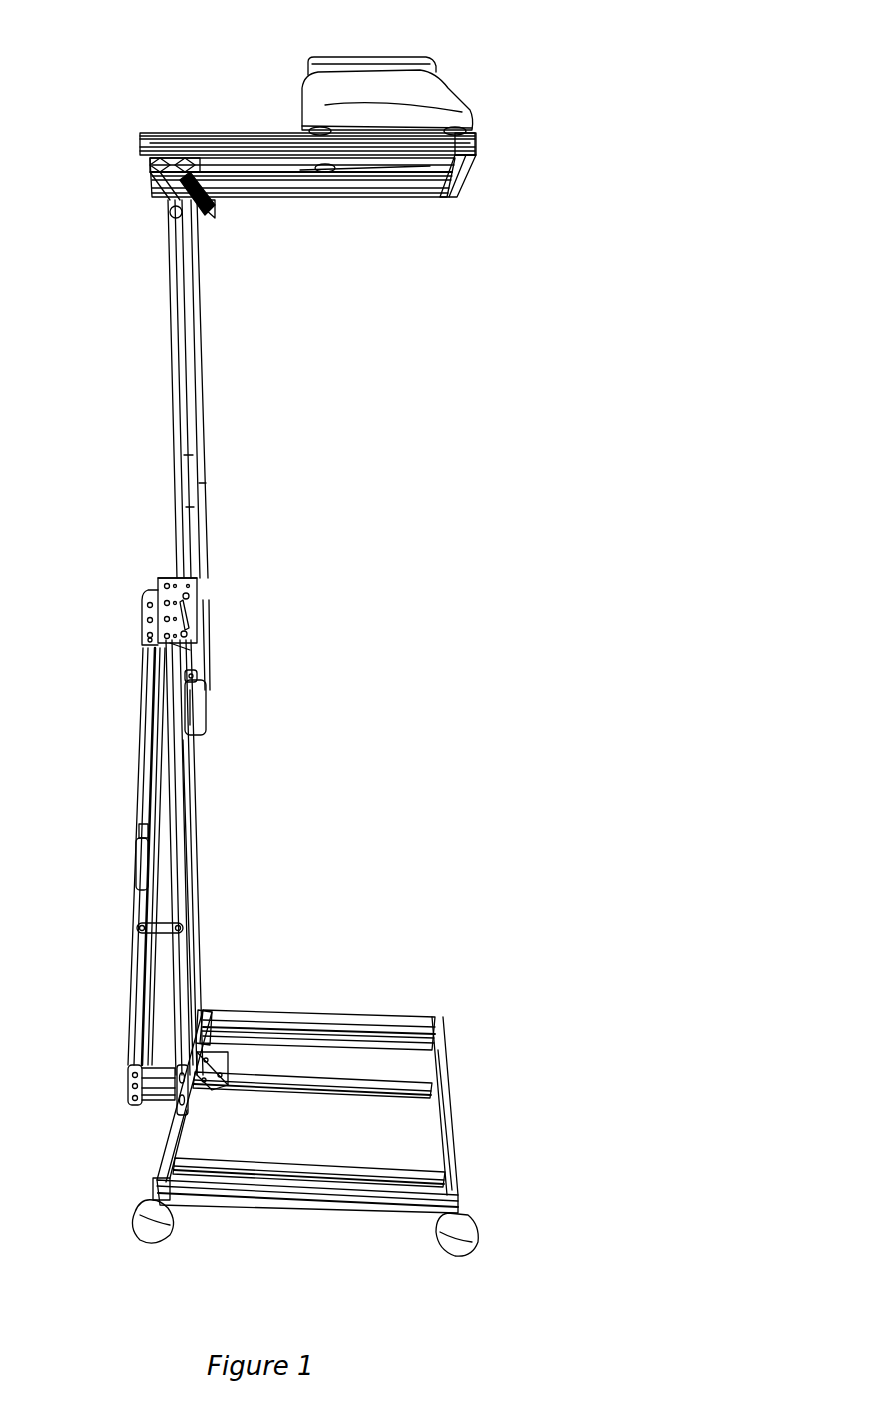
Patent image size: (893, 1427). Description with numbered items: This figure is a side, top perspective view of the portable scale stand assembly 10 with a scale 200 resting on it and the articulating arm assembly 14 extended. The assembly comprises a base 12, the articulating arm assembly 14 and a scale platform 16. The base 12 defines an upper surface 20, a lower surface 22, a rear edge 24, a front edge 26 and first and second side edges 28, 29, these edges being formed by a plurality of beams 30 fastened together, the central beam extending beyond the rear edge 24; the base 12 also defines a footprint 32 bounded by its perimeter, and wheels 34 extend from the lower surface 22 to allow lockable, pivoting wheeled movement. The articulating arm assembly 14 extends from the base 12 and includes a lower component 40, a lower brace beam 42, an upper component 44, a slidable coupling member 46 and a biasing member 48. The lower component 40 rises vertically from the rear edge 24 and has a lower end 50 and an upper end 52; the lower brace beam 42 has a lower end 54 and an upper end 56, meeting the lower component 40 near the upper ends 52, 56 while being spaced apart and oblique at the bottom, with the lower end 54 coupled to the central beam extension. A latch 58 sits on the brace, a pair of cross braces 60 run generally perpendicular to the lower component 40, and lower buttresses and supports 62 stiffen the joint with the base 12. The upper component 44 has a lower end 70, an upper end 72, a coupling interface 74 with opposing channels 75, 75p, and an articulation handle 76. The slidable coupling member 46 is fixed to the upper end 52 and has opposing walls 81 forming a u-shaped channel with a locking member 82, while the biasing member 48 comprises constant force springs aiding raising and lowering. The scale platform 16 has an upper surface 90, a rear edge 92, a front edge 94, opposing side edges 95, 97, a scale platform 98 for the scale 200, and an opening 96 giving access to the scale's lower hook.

The portable scale stand assembly 10 is at (497, 556).
The base 12 is at (478, 1110).
The articulating arm assembly 14 is at (140, 462).
The scale platform 16 is at (248, 128).
The upper surface 20 is at (355, 1028).
The lower surface 22 is at (370, 1043).
The rear edge 24 is at (160, 1158).
The front edge 26 is at (450, 1076).
The first side edge 28 is at (258, 1012).
The second side edge 29 is at (325, 1202).
The beams 30 is at (238, 1112).
The footprint 32 is at (315, 1058).
The wheels 34 is at (450, 1258).
The lower component 40 is at (190, 880).
The lower brace beam 42 is at (140, 968).
The upper component 44 is at (205, 393).
The slidable coupling member 46 is at (217, 627).
The biasing member 48 is at (162, 572).
The lower end 50 is at (188, 975).
The upper end 52 is at (178, 650).
The lower end 54 is at (128, 1082).
The upper end 56 is at (142, 610).
The latch 58 is at (137, 860).
The cross braces 60 is at (133, 928).
The lower buttresses and supports 62 is at (175, 1102).
The lower end 70 is at (210, 705).
The upper end 72 is at (166, 216).
The coupling interface 74 is at (196, 455).
The channel 75 is at (196, 507).
The channel 75p is at (208, 483).
The articulation handle 76 is at (190, 710).
The opposing wall 81 is at (189, 591).
The locking member 82 is at (165, 628).
The upper surface 90 is at (160, 133).
The rear edge 92 is at (148, 180).
The front edge 94 is at (470, 178).
The side edge 95 is at (295, 132).
The opening 96 is at (388, 174).
The side edge 97 is at (303, 200).
The scale platform 98 is at (205, 133).
The scale 200 is at (433, 48).